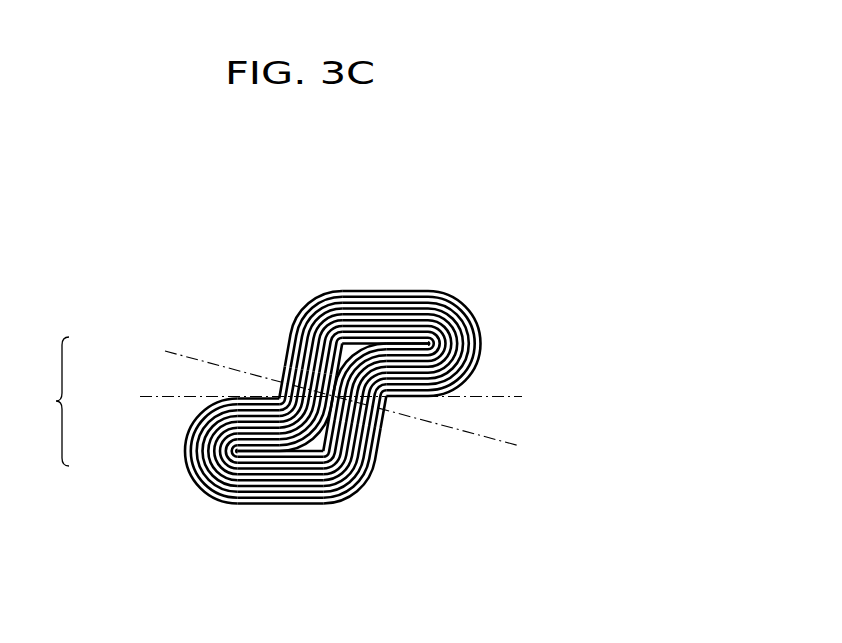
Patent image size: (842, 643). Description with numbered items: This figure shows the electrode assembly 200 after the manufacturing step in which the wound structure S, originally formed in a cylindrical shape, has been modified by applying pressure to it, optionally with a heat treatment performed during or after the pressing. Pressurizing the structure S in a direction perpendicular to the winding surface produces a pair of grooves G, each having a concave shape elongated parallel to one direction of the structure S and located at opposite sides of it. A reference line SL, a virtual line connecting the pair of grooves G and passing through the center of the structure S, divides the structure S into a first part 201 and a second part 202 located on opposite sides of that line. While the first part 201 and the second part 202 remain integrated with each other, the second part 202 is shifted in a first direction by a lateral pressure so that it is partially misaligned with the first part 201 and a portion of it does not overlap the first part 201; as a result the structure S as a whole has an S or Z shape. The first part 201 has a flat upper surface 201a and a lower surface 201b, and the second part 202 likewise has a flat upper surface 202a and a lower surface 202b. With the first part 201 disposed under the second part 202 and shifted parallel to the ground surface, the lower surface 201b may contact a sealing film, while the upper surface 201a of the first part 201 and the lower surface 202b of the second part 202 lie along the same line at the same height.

The electrode assembly 200 is at (552, 268).
The first part 201 is at (156, 457).
The upper surface of the first part 201a is at (240, 398).
The lower surface of the first part 201b is at (228, 507).
The second part 202 is at (156, 347).
The upper surface of the second part 202a is at (388, 290).
The lower surface of the second part 202b is at (434, 398).
The groove G is at (275, 368).
The structure S is at (54, 401).
The reference line SL is at (346, 408).